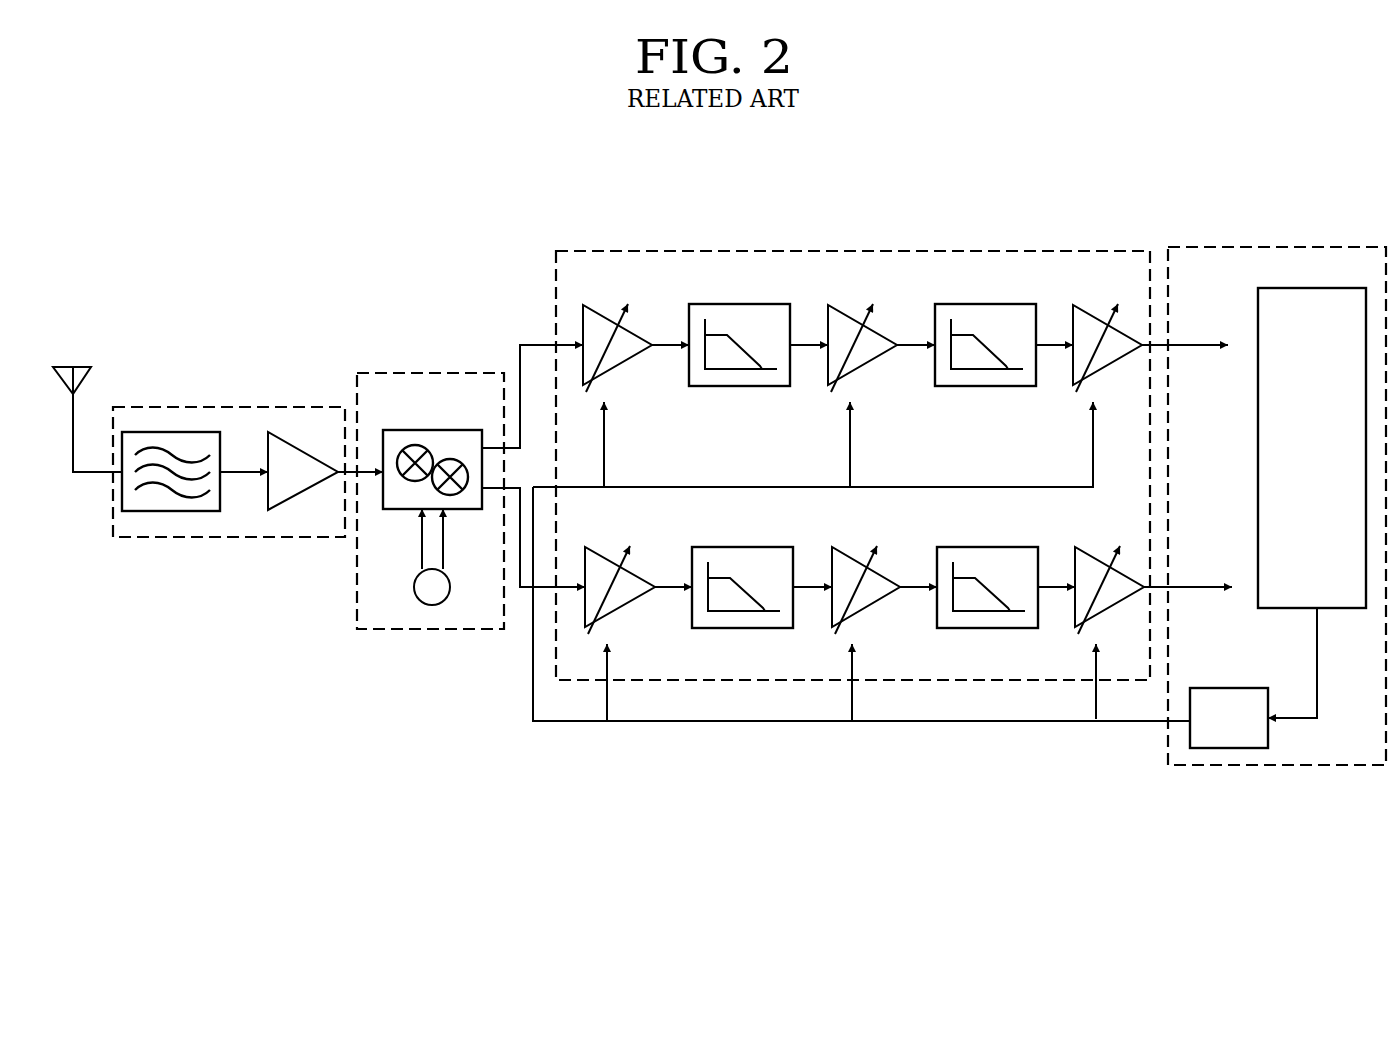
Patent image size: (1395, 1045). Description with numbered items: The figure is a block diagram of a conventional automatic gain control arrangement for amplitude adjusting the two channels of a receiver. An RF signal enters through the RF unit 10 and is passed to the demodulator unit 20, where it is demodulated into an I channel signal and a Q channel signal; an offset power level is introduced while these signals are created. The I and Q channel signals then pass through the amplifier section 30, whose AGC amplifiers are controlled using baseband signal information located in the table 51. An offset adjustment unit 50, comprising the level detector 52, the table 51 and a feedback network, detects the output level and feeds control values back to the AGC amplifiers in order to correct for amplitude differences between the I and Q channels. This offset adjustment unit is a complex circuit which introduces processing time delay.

The RF unit 10 is at (225, 407).
The demodulator unit 20 is at (428, 373).
The AGC amplifier section (AGC amplifiers and low-pass filters) 30 is at (850, 251).
The offset adjustment unit 50 is at (1277, 490).
The table 51 is at (1230, 748).
The level detector 52 is at (1310, 288).